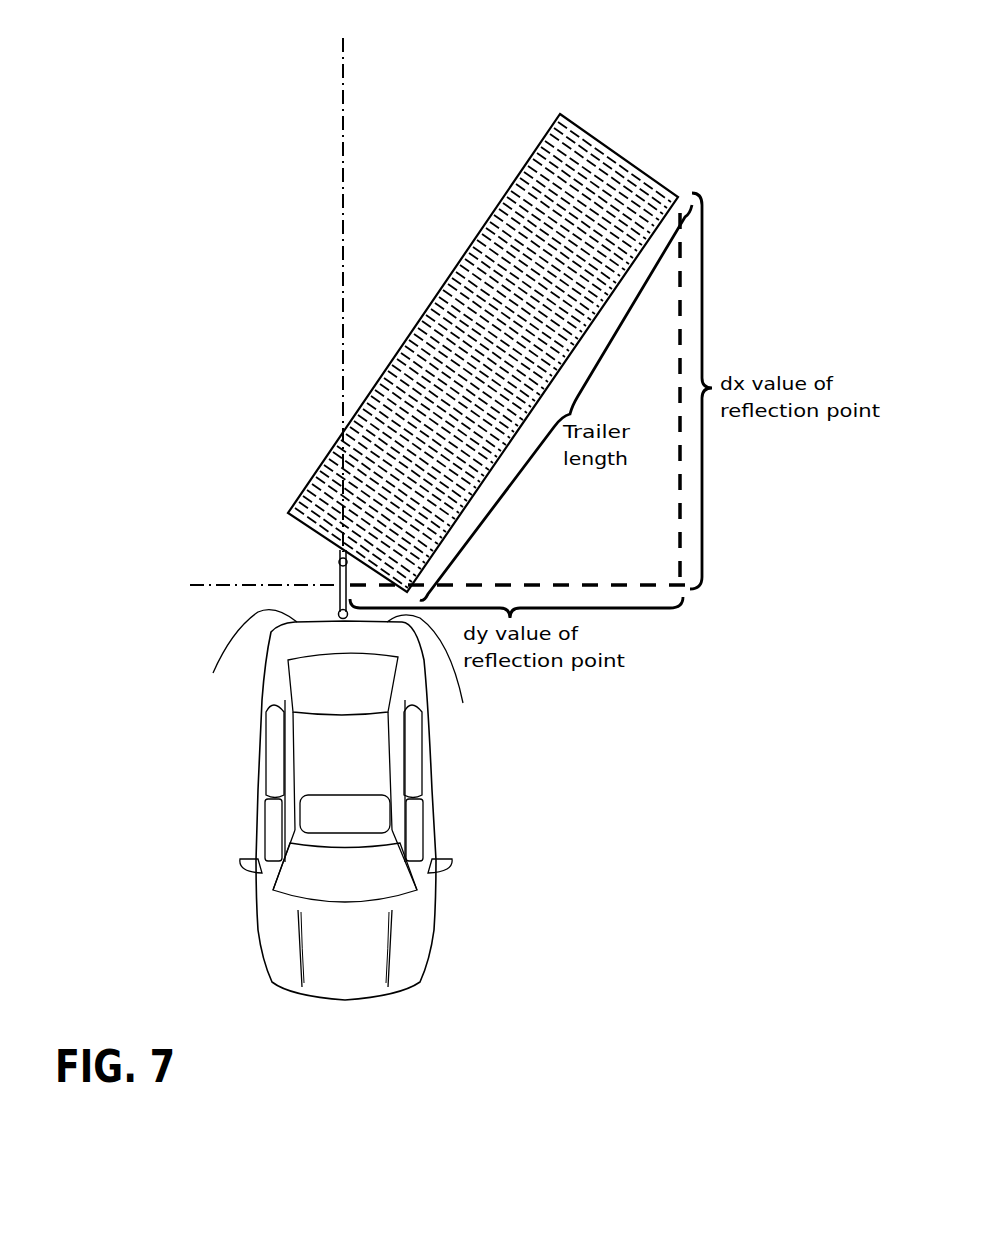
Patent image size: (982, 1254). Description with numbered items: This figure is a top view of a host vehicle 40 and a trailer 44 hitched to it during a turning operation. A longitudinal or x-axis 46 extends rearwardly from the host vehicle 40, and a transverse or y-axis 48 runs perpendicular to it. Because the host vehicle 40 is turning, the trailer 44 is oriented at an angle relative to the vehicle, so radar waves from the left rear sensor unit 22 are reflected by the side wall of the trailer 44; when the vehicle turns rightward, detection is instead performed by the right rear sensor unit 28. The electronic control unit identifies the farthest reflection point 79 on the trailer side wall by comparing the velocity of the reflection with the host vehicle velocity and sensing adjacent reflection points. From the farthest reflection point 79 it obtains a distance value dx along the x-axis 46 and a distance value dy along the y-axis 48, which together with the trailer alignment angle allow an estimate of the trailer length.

The trailer 44 is at (613, 153).
The farthest reflection point 79 is at (689, 196).
The longitudinal or x-axis 46 is at (345, 127).
The transverse or y-axis 48 is at (204, 582).
The vehicle object right rear sensor unit 28 is at (247, 658).
The vehicle object left rear sensor unit 22 is at (432, 673).
The host vehicle 40 is at (258, 801).